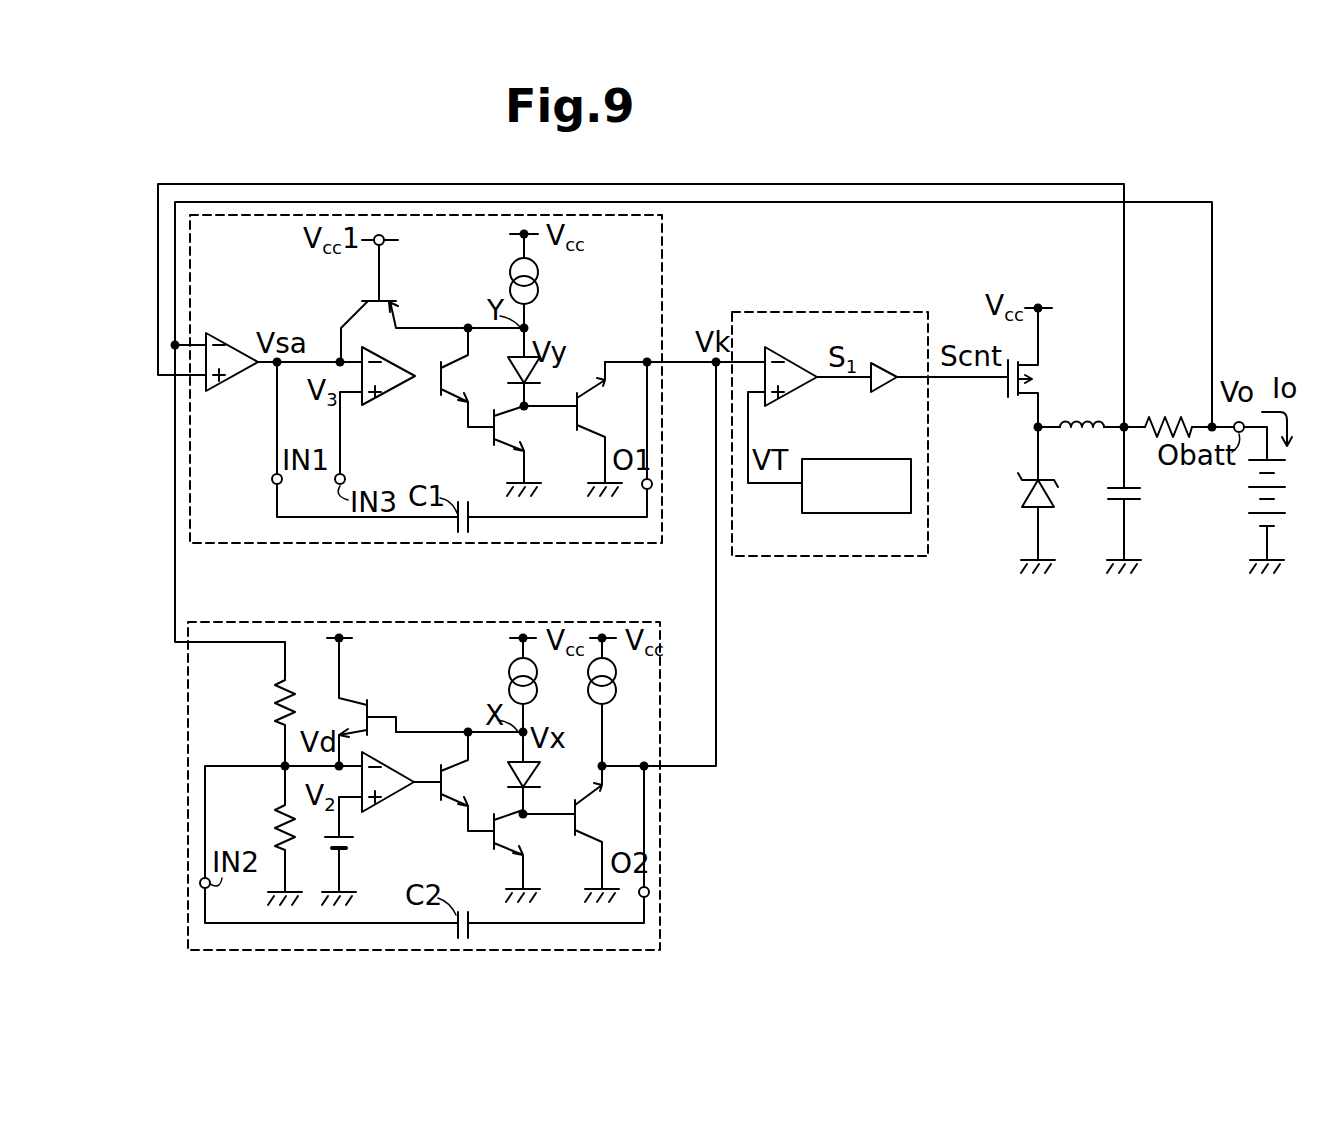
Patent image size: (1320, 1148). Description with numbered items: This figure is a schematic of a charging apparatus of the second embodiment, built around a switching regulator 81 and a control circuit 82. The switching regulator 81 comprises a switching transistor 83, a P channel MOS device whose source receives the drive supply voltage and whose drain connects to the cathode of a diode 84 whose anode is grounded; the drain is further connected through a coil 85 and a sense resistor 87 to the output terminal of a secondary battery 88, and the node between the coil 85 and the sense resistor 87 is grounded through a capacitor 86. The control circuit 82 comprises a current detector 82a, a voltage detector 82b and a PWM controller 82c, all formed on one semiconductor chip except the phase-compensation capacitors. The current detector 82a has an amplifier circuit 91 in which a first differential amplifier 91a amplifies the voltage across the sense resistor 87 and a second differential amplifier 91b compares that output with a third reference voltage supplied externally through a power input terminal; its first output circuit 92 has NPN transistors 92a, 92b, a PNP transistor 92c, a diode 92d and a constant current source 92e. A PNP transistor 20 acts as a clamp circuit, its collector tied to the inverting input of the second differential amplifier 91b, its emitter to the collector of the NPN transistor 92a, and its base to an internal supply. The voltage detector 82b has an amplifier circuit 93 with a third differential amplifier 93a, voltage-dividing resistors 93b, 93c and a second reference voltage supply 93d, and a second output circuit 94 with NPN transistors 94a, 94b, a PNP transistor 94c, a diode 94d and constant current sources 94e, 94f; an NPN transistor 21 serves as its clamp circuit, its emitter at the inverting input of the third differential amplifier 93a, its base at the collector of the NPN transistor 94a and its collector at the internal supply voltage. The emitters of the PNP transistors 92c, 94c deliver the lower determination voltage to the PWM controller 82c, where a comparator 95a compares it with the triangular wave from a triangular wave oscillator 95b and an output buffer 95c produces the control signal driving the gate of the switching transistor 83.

The PNP transistor 20 is at (372, 298).
The NPN transistor 21 is at (370, 700).
The switching regulator 81 is at (1147, 617).
The control circuit 82 is at (985, 687).
The current detector 82a is at (552, 545).
The voltage detector 82b is at (455, 621).
The PWM controller 82c is at (775, 558).
The switching transistor 83 is at (1038, 393).
The diode 84 is at (1022, 498).
The coil 85 is at (1084, 410).
The capacitor 86 is at (1136, 487).
The sense resistor 87 is at (1170, 420).
The secondary battery 88 is at (1254, 513).
The amplifier circuit 91 is at (280, 293).
The first differential amplifier 91a is at (240, 386).
The second differential amplifier 91b is at (403, 392).
The first output circuit 92 is at (438, 294).
The NPN transistor 92a is at (449, 394).
The NPN transistor 92b is at (502, 445).
The PNP transistor 92c is at (583, 430).
The diode 92d is at (566, 394).
The constant current source 92e is at (510, 268).
The amplifier circuit 93 is at (319, 699).
The third differential amplifier 93a is at (400, 812).
The voltage-dividing resistor 93b is at (280, 700).
The voltage-dividing resistor 93c is at (280, 830).
The second reference voltage supply 93d is at (340, 852).
The second output circuit 94 is at (434, 696).
The NPN transistor 94a is at (448, 803).
The NPN transistor 94b is at (502, 850).
The PNP transistor 94c is at (582, 835).
The diode 94d is at (540, 782).
The constant current source 94e is at (510, 674).
The constant current source 94f is at (588, 680).
The comparator 95a is at (797, 400).
The triangular wave oscillator 95b is at (816, 513).
The output buffer 95c is at (886, 390).